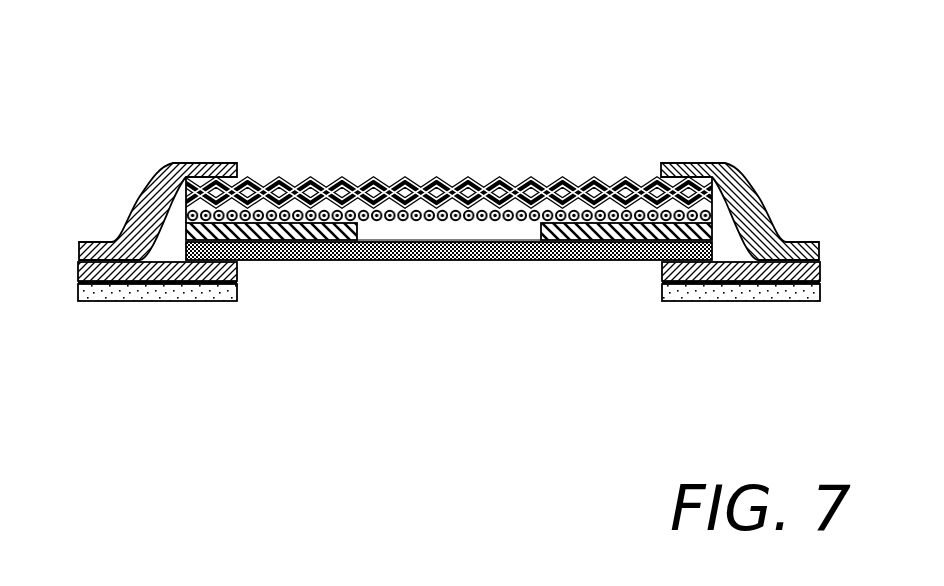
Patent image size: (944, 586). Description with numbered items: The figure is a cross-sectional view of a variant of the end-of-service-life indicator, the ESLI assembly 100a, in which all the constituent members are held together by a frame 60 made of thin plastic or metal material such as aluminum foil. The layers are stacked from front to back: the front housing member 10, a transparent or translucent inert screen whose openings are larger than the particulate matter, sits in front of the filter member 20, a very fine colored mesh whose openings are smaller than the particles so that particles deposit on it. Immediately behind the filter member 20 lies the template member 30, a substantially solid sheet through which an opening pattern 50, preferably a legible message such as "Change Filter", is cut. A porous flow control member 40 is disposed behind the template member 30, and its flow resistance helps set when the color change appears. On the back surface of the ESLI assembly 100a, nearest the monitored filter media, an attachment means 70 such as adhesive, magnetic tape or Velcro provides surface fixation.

The ESLI assembly 100a is at (220, 80).
The front housing member 10 is at (452, 146).
The filter member 20 is at (423, 177).
The template member 30 is at (315, 230).
The flow control member 40 is at (442, 260).
The opening pattern 50 is at (498, 235).
The frame 60 is at (112, 242).
The attachment means 70 is at (78, 293).